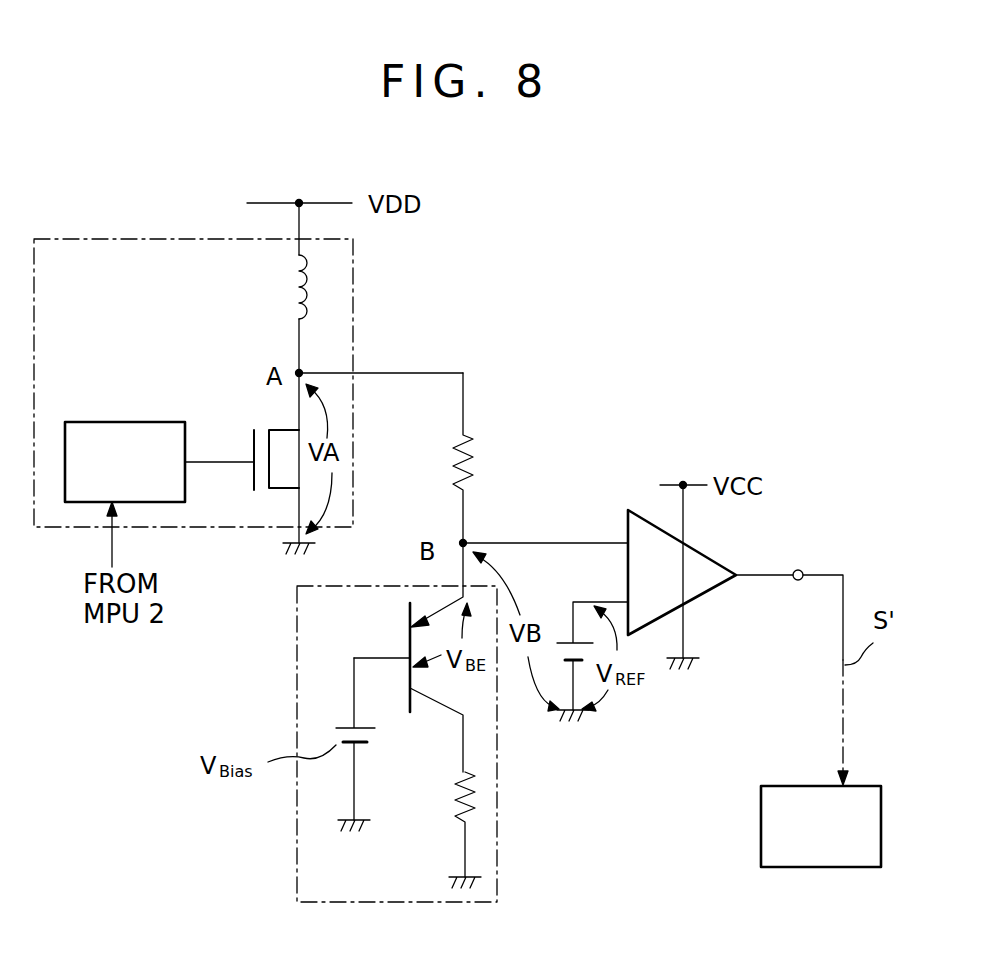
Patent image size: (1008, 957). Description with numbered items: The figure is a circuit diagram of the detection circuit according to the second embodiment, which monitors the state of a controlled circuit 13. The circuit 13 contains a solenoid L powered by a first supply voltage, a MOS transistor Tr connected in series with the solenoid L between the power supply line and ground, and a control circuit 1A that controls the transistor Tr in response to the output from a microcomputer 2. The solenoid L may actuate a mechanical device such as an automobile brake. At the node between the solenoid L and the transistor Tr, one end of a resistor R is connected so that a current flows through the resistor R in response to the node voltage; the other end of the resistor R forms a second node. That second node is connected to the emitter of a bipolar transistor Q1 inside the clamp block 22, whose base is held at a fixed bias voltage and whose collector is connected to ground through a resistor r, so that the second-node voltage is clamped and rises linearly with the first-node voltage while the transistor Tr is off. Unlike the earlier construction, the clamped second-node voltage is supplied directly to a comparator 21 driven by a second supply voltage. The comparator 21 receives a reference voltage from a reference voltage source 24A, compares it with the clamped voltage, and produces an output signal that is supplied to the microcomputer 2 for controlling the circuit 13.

The circuit 13 is at (46, 236).
The control circuit 1A is at (100, 421).
The MOS transistor Tr is at (254, 496).
The solenoid L is at (288, 290).
The resistor R is at (444, 458).
The bipolar transistor Q1 is at (400, 648).
The bias circuit block 22 is at (297, 695).
The reference voltage source 24A is at (557, 625).
The comparator 21 is at (712, 557).
The resistor r is at (447, 824).
The microcomputer 2 is at (856, 784).